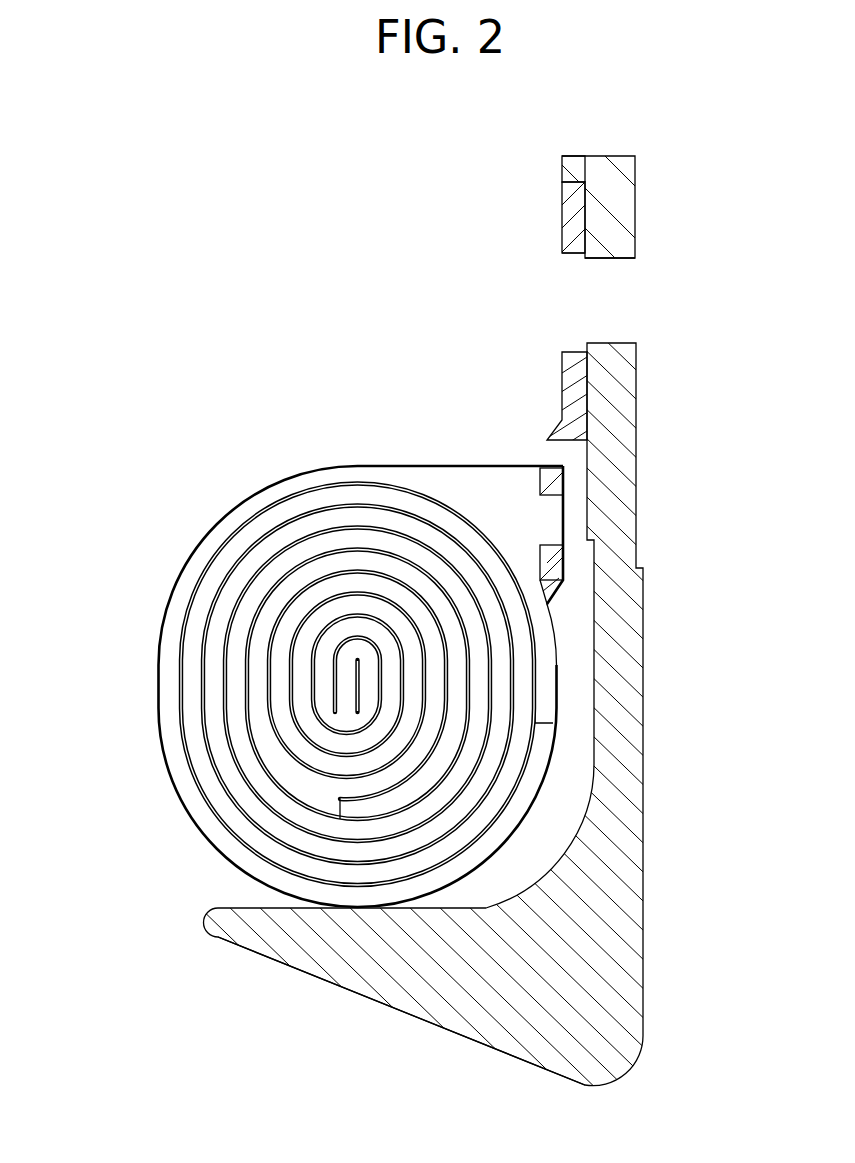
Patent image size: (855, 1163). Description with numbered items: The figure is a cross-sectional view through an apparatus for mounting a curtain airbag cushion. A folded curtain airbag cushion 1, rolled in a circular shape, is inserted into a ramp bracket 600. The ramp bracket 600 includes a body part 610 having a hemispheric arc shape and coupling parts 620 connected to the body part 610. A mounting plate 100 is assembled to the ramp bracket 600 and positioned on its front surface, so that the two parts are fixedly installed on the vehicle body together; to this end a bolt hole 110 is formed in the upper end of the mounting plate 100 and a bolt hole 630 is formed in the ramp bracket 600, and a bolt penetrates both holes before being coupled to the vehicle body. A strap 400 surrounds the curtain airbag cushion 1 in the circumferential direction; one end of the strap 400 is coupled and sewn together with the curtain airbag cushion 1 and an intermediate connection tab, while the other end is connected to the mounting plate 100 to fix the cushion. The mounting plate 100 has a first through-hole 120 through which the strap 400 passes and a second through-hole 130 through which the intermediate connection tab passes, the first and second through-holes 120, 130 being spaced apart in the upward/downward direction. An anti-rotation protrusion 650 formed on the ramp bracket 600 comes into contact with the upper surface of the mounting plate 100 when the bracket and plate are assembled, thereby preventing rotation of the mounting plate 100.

The curtain airbag cushion 1 is at (287, 572).
The mounting plate 100 is at (572, 215).
The bolt hole 110 is at (574, 257).
The first through-hole 120 is at (560, 443).
The second through-hole 130 is at (545, 543).
The strap 400 is at (160, 676).
The ramp bracket 600 is at (651, 651).
The body part 610 is at (441, 1010).
The coupling part 620 is at (623, 210).
The bolt hole 630 is at (605, 259).
The anti-rotation protrusion 650 is at (575, 166).